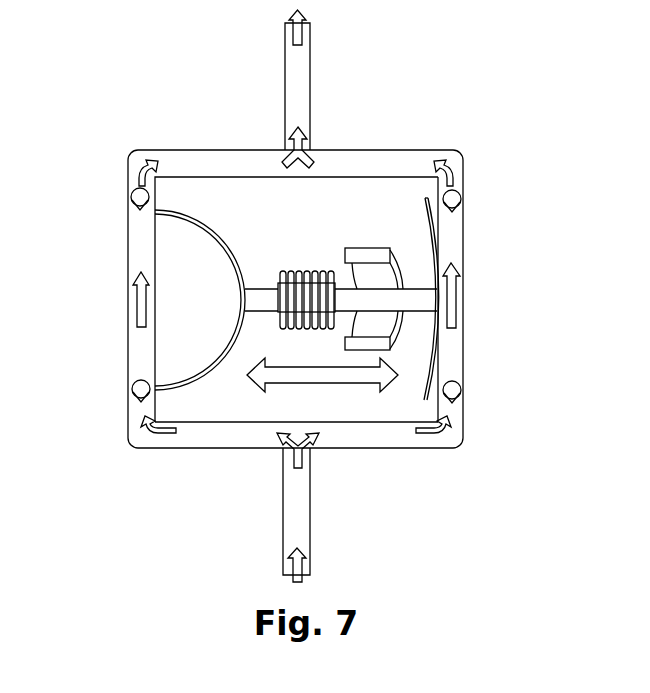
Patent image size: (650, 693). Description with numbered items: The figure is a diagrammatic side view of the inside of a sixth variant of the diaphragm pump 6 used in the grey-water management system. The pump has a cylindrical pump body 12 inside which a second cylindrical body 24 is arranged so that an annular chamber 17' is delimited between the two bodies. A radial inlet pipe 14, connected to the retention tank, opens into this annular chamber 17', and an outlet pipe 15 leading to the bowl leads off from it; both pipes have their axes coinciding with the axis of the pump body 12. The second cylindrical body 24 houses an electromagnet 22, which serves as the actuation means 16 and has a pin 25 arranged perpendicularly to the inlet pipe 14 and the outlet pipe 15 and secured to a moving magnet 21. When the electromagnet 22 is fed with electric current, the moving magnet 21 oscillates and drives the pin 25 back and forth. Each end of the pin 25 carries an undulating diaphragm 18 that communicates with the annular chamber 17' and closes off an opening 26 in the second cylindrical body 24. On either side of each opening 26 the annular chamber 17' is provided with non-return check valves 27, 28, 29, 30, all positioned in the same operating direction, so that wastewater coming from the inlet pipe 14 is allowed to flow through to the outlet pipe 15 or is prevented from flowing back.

The diaphragm pump 6 is at (188, 110).
The cylindrical pump body 12 is at (466, 217).
The inlet pipe 14 is at (310, 510).
The outlet pipe 15 is at (311, 78).
The actuation means 16 is at (331, 194).
The annular chamber 17' is at (273, 461).
The undulating diaphragm 18 is at (195, 383).
The moving magnet 21 is at (373, 248).
The electromagnet 22 is at (257, 224).
The second cylindrical body 24 is at (405, 423).
The pin 25 is at (414, 290).
The opening 26 is at (164, 282).
The non-return valve 27 is at (133, 380).
The non-return valve 28 is at (131, 189).
The non-return valve 29 is at (467, 185).
The non-return valve 30 is at (463, 383).